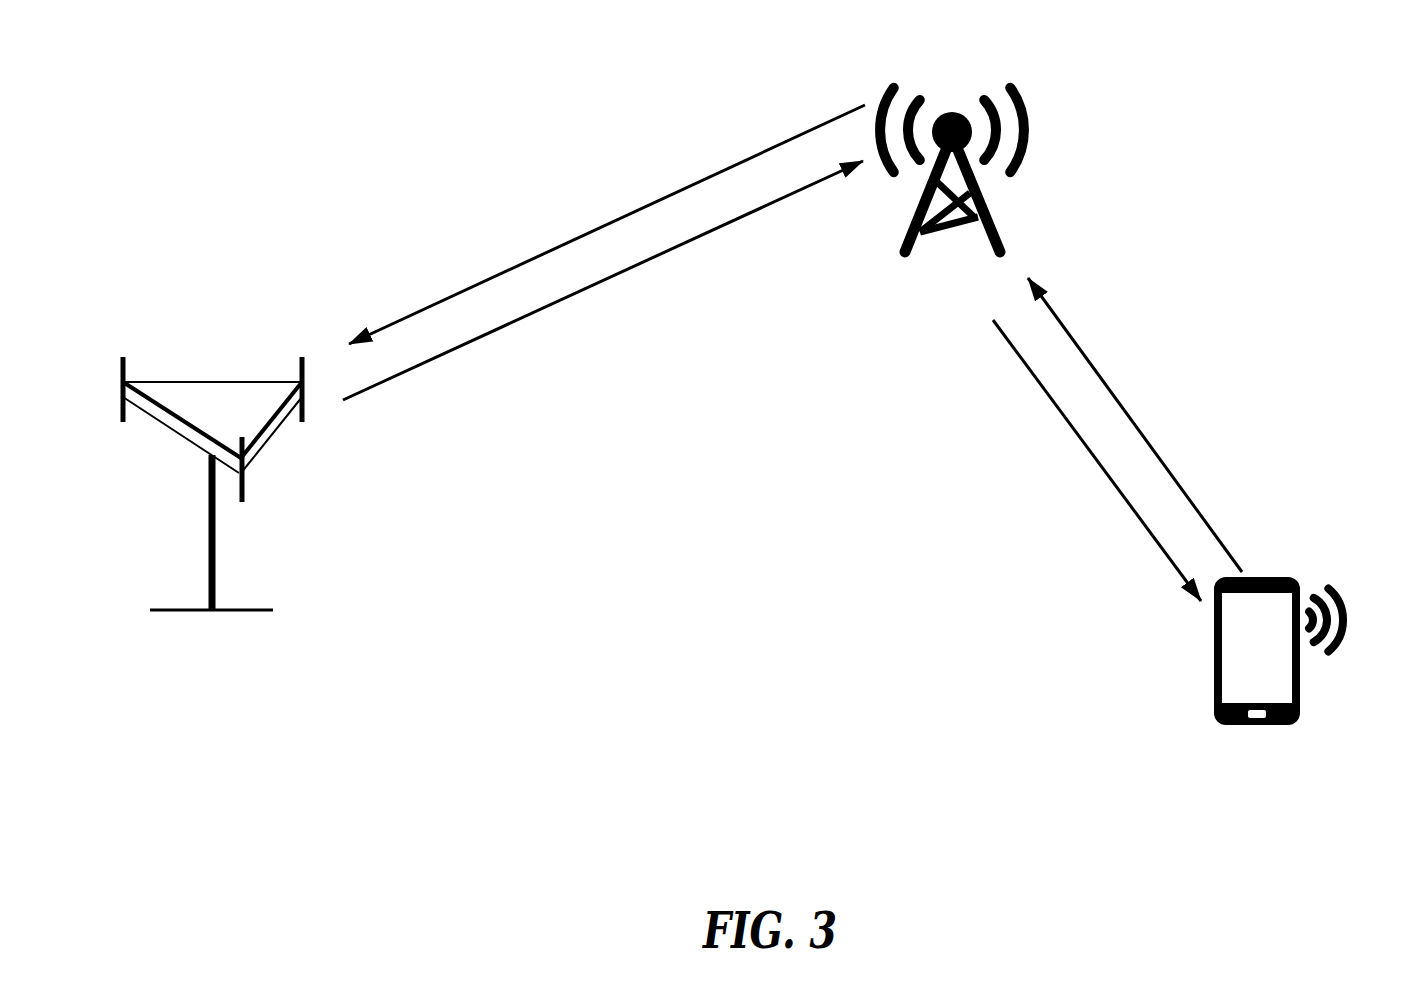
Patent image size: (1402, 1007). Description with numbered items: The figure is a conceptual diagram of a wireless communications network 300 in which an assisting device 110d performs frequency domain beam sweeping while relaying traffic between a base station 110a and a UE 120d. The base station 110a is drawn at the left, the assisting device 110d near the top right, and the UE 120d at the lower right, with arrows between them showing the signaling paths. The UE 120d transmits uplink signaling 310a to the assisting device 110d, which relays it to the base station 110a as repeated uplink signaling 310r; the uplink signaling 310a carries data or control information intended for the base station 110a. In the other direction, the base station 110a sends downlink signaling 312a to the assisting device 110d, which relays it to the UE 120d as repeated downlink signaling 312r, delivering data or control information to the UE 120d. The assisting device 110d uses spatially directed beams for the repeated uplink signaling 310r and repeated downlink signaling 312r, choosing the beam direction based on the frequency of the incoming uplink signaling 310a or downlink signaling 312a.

The wireless communications network 300 is at (733, 419).
The base station 110a is at (212, 521).
The assisting device 110d is at (952, 224).
The UE 120d is at (1278, 693).
The repeated uplink signaling 310r is at (607, 224).
The downlink signaling 312a is at (603, 280).
The uplink signaling 310a is at (1170, 425).
The repeated downlink signaling 312r is at (1058, 460).